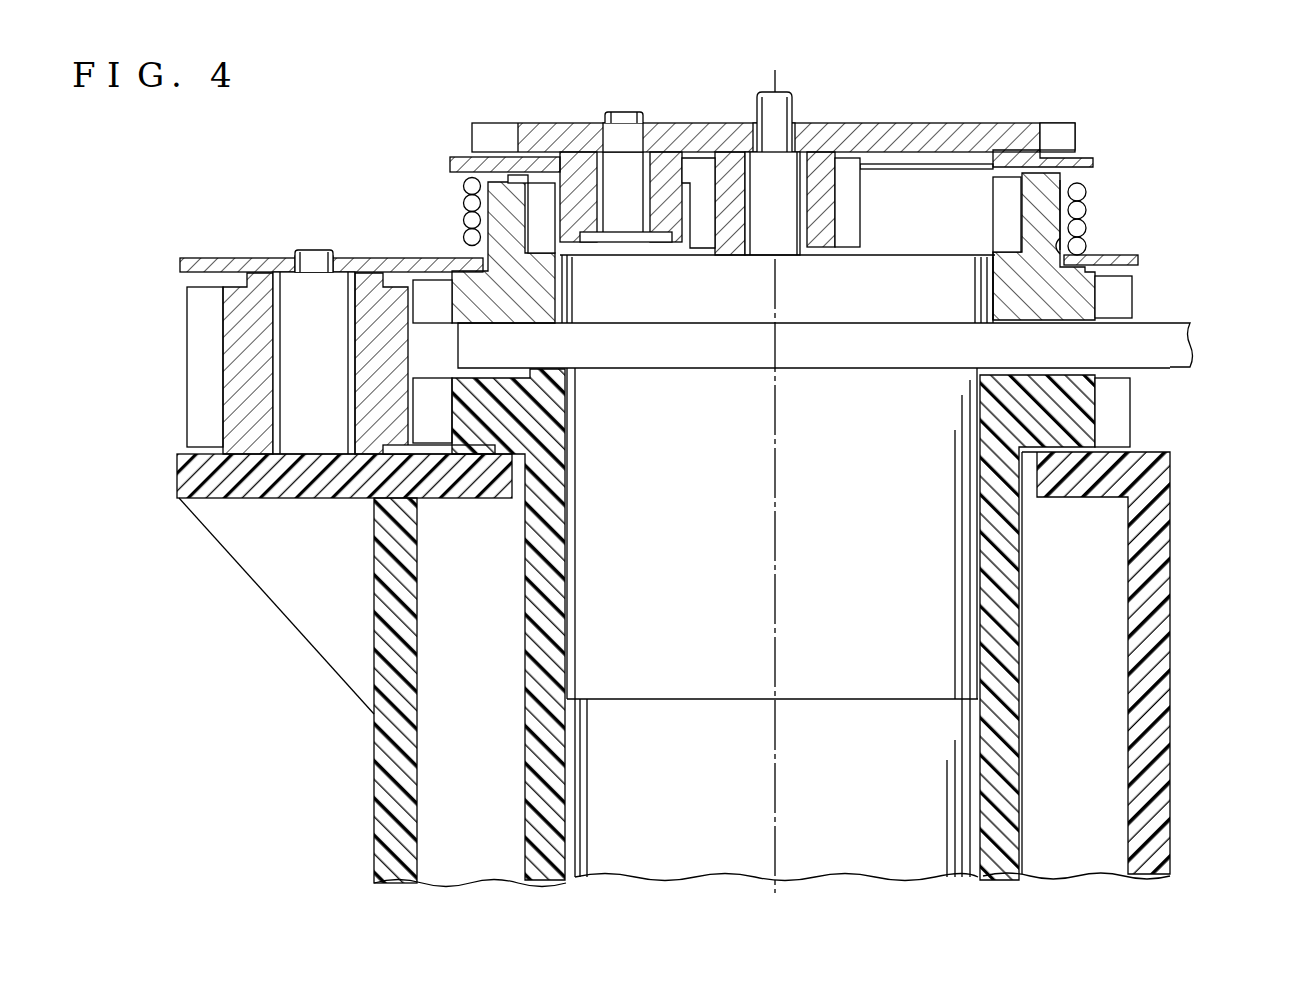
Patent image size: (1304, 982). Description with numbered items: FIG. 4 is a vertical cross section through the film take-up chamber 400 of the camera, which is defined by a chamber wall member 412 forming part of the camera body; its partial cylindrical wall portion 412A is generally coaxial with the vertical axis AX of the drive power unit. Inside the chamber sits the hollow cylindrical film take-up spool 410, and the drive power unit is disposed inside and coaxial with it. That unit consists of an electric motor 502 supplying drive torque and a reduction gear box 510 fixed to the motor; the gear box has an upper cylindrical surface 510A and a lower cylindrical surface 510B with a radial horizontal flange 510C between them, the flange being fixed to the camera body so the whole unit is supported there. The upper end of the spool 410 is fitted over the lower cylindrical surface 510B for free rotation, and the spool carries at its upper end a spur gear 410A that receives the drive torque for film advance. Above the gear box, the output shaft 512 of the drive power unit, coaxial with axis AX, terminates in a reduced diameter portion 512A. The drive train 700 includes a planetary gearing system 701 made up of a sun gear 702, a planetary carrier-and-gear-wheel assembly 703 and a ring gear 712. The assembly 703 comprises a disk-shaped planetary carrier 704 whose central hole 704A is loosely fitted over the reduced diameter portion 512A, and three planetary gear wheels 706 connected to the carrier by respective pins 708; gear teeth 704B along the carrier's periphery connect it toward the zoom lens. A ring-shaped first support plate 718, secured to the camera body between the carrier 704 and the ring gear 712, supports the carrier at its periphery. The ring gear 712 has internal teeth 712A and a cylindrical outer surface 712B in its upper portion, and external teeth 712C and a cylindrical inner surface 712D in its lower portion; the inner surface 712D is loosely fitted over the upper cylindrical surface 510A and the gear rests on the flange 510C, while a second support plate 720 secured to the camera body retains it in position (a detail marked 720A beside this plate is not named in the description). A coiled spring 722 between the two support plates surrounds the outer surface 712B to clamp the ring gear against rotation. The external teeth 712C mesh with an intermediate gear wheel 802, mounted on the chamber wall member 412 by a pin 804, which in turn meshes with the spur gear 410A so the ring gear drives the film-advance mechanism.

The film take-up chamber 400 is at (1085, 630).
The film take-up spool 410 is at (1012, 563).
The spur gear 410A is at (478, 433).
The chamber wall member 412 is at (365, 848).
The partial cylindrical wall portion 412A is at (372, 752).
The electric motor 502 is at (882, 840).
The reduction gear box 510 is at (1222, 350).
The upper cylindrical surface 510A is at (862, 308).
The lower cylindrical surface 510B is at (885, 533).
The radial horizontal flange 510C is at (910, 363).
The output shaft 512 is at (763, 247).
The reduced diameter portion 512A is at (780, 108).
The drive train 700 is at (1140, 110).
The planetary gearing system 701 is at (397, 195).
The sun gear 702 is at (728, 170).
The planetary carrier-and-gear-wheel assembly 703 is at (468, 100).
The planetary carrier 704 is at (1027, 130).
The central hole 704A is at (783, 130).
The gear teeth 704B is at (1077, 135).
The planetary gear wheels 706 is at (583, 160).
The pins 708 is at (625, 208).
The ring gear 712 is at (517, 200).
The internal teeth 712A is at (1007, 200).
The cylindrical outer surface 712B is at (1087, 188).
The external teeth 712C is at (1120, 300).
The cylindrical inner surface 712D is at (993, 290).
The first support plate 718 is at (1100, 157).
The second support plate 720 is at (1138, 256).
The retaining ring groove 720A is at (1062, 245).
The coiled spring 722 is at (1087, 208).
The intermediate gear wheel 802 is at (240, 290).
The pin 804 is at (303, 463).
The axis AX is at (772, 800).